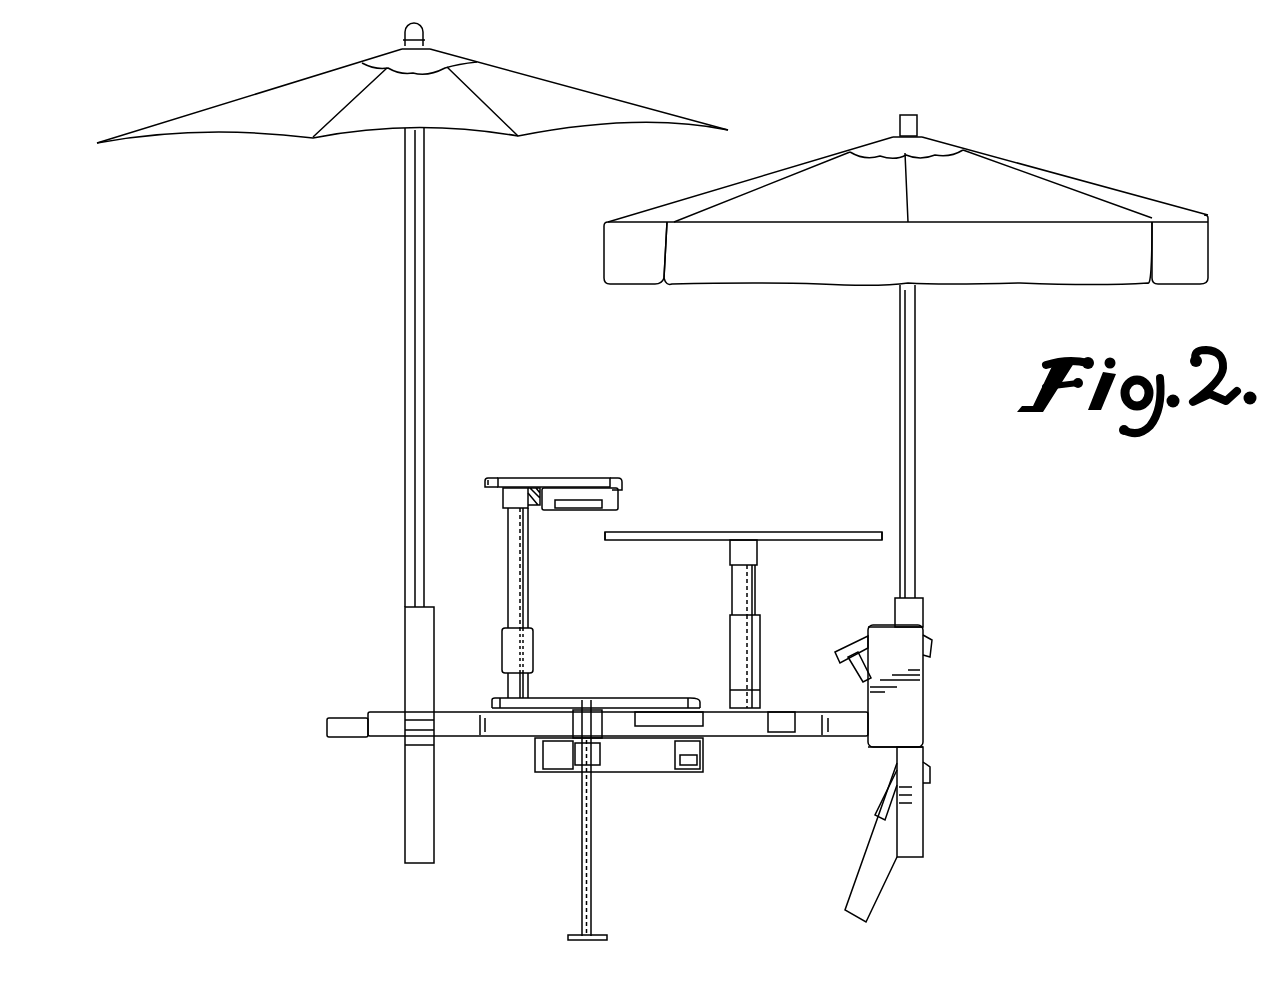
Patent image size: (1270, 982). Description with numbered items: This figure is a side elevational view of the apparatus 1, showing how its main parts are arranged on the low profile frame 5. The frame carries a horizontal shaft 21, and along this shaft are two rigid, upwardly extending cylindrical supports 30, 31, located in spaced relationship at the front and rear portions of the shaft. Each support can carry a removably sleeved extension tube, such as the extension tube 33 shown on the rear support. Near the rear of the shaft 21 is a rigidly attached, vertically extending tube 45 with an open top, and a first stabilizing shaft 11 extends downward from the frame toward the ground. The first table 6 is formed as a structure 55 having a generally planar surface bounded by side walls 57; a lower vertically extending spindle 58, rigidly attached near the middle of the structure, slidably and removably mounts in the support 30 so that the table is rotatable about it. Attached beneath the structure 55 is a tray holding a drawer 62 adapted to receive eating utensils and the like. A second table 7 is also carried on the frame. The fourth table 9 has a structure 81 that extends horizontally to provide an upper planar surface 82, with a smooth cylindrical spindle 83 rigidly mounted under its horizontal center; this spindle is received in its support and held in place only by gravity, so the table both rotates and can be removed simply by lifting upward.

The apparatus 1 is at (958, 634).
The low profile frame 5 is at (739, 737).
The first table 6 is at (540, 478).
The second table 7 is at (620, 698).
The fourth table 9 is at (762, 532).
The first stabilizing shaft 11 is at (593, 857).
The shaft 21 is at (814, 737).
The cylindrical support 30 is at (528, 688).
The cylindrical support 31 is at (760, 690).
The extension tube 33 is at (925, 755).
The tube 45 is at (406, 760).
The structure 55 is at (513, 478).
The side walls 57 is at (596, 478).
The spindle 58 is at (528, 580).
The drawer 62 is at (610, 500).
The structure 81 is at (818, 532).
The upper planar surface 82 is at (672, 532).
The spindle 83 is at (757, 573).